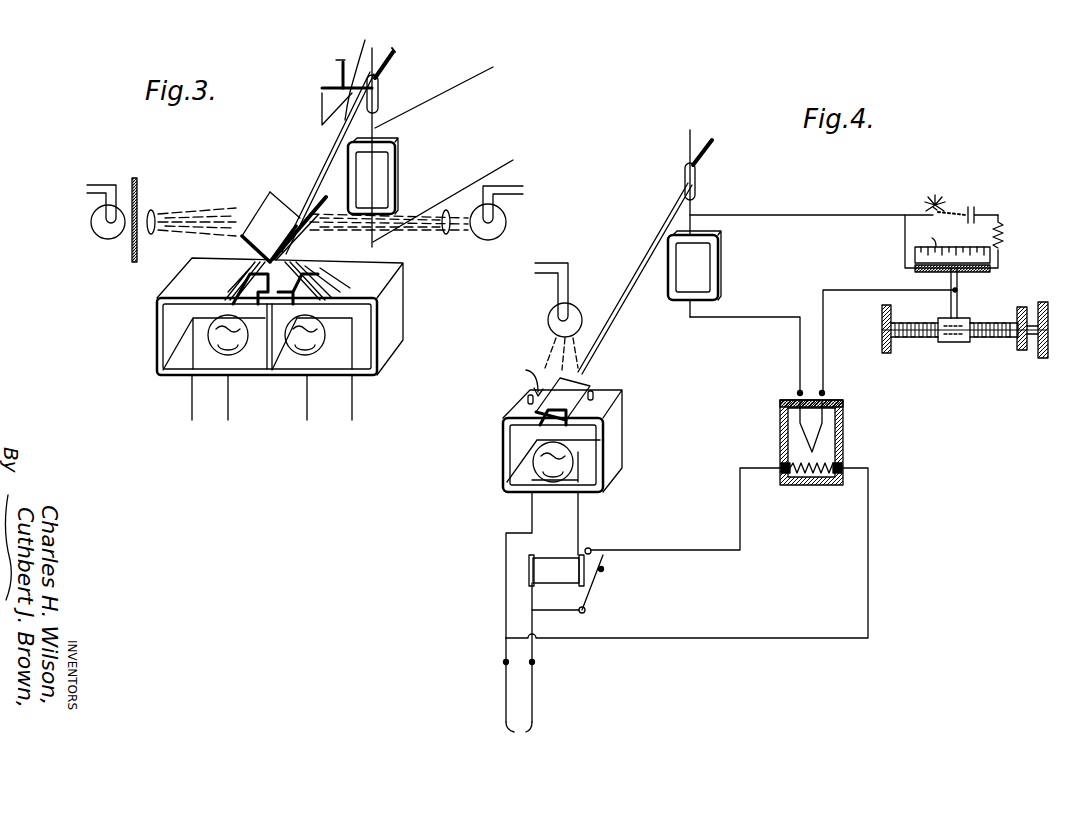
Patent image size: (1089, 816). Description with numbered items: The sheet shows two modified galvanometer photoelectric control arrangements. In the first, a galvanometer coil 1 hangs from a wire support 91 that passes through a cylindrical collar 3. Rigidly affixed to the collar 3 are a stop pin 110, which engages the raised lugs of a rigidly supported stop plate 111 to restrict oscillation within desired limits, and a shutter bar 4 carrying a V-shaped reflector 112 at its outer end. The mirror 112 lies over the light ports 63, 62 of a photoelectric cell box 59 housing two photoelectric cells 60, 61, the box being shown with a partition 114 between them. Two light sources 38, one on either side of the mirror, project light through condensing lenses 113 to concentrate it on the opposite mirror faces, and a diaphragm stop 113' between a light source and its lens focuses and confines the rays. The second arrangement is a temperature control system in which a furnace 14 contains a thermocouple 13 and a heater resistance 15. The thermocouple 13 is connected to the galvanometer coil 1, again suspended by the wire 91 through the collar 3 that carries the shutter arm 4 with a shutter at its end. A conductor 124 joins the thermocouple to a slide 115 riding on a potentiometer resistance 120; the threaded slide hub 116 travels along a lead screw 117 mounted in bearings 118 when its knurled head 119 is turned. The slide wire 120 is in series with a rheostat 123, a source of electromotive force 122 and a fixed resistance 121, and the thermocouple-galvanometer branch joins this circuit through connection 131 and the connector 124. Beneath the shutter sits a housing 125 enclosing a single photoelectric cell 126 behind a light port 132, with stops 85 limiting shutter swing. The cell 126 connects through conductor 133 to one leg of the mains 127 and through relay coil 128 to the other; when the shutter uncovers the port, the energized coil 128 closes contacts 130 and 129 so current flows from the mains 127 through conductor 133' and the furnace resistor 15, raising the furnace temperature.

In FIG. 3, the galvanometer coil 1 is at (395, 170).
In FIG. 4, the galvanometer coil 1 is at (718, 264).
In FIG. 3, the cylindrical collar 3 is at (380, 100).
In FIG. 4, the cylindrical collar 3 is at (697, 188).
In FIG. 3, the shutter bar 4 is at (330, 153).
In FIG. 4, the shutter bar 4 is at (625, 298).
In FIG. 4, the thermocouple 13 is at (800, 430).
In FIG. 4, the furnace 14 is at (845, 433).
In FIG. 4, the heater resistance 15 is at (808, 472).
In FIG. 3, the light source 38 is at (96, 226).
In FIG. 4, the light source 38 is at (578, 305).
In FIG. 3, the photoelectric cell box 59 is at (395, 306).
In FIG. 3, the photoelectric cell 60 is at (212, 333).
In FIG. 3, the photoelectric cell 61 is at (322, 333).
In FIG. 3, the light port 62 is at (335, 266).
In FIG. 3, the light port 63 is at (246, 283).
In FIG. 4, the stop 85 is at (597, 400).
In FIG. 3, the wire support 91 is at (374, 50).
In FIG. 4, the wire support 91 is at (692, 140).
In FIG. 3, the stop pin 110 is at (367, 69).
In FIG. 3, the stop plate 111 is at (341, 62).
In FIG. 3, the V-shaped reflector 112 is at (268, 215).
In FIG. 3, the condensing lens 113 is at (174, 192).
In FIG. 3, the diaphragm stop 113' is at (140, 202).
In FIG. 3, the partition 114 is at (279, 280).
In FIG. 4, the slide 115 is at (958, 293).
In FIG. 4, the threaded slide hub 116 is at (967, 318).
In FIG. 4, the lead screw 117 is at (982, 342).
In FIG. 4, the bearing 118 is at (1024, 307).
In FIG. 4, the knob 119 is at (1050, 322).
In FIG. 4, the potentiometer resistance 120 is at (991, 268).
In FIG. 4, the fixed resistance 121 is at (1001, 232).
In FIG. 4, the source of E. M. F. 122 is at (976, 208).
In FIG. 4, the rheostat 123 is at (940, 204).
In FIG. 4, the conductor 124 is at (780, 316).
In FIG. 4, the housing 125 is at (612, 436).
In FIG. 4, the photoelectric cell 126 is at (562, 463).
In FIG. 4, the main current supply 127 is at (522, 730).
In FIG. 4, the relay coil 128 is at (556, 566).
In FIG. 4, the switch contact 129 is at (593, 550).
In FIG. 4, the switch contact 130 is at (604, 580).
In FIG. 4, the connection 131 is at (823, 215).
In FIG. 4, the light port 132 is at (540, 431).
In FIG. 4, the conductor 133 is at (495, 565).
In FIG. 4, the conductor 133' is at (687, 568).